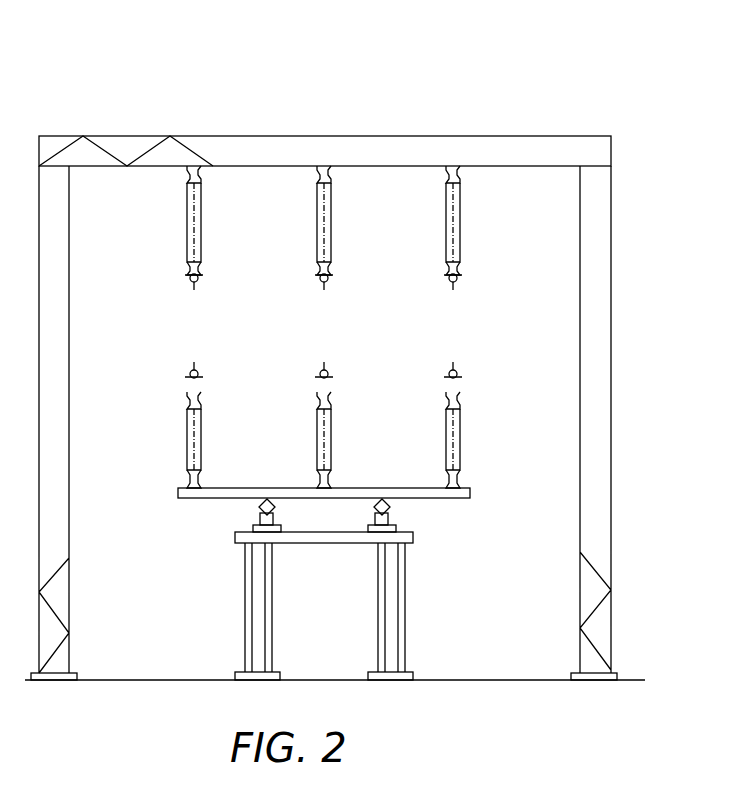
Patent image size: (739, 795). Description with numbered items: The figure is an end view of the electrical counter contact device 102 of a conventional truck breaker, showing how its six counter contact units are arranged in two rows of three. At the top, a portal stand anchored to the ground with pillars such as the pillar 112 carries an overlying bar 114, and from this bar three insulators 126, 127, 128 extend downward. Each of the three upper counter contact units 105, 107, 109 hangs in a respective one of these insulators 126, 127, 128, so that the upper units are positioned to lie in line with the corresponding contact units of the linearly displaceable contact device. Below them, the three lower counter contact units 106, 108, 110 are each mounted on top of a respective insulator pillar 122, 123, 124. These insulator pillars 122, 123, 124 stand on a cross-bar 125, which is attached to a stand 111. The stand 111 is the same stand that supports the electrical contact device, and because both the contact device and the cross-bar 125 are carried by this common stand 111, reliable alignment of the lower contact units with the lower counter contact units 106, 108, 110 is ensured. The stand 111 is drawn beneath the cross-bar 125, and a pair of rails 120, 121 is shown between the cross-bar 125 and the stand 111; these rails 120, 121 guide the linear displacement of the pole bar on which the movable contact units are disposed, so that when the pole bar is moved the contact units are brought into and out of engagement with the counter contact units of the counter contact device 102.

The electrical counter contact device 102 is at (598, 70).
The overlying bar 114 is at (367, 145).
The pillar 112 is at (603, 337).
The insulator 126 is at (192, 232).
The insulator 127 is at (322, 232).
The insulator 128 is at (451, 232).
The upper counter contact unit 105 is at (190, 281).
The upper counter contact unit 107 is at (321, 281).
The upper counter contact unit 109 is at (450, 281).
The lower counter contact unit 106 is at (190, 375).
The lower counter contact unit 108 is at (320, 375).
The lower counter contact unit 110 is at (449, 375).
The insulator pillar 122 is at (190, 432).
The insulator pillar 123 is at (321, 432).
The insulator pillar 124 is at (450, 432).
The cross-bar 125 is at (460, 487).
The rail 120 is at (258, 507).
The rail 121 is at (392, 507).
The stand 111 is at (428, 638).